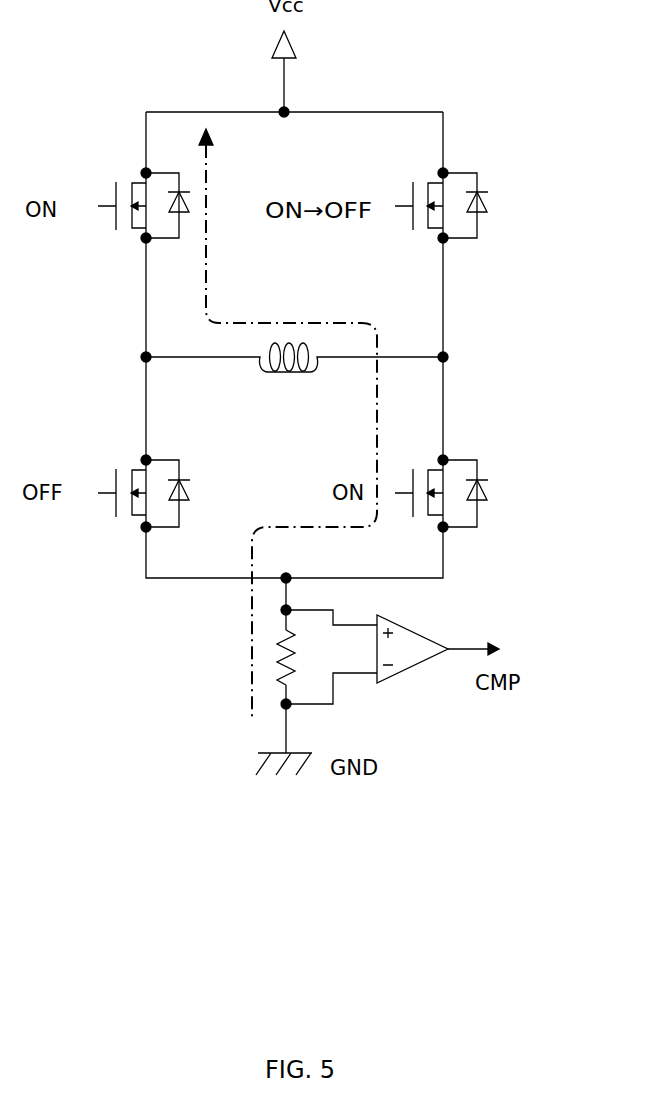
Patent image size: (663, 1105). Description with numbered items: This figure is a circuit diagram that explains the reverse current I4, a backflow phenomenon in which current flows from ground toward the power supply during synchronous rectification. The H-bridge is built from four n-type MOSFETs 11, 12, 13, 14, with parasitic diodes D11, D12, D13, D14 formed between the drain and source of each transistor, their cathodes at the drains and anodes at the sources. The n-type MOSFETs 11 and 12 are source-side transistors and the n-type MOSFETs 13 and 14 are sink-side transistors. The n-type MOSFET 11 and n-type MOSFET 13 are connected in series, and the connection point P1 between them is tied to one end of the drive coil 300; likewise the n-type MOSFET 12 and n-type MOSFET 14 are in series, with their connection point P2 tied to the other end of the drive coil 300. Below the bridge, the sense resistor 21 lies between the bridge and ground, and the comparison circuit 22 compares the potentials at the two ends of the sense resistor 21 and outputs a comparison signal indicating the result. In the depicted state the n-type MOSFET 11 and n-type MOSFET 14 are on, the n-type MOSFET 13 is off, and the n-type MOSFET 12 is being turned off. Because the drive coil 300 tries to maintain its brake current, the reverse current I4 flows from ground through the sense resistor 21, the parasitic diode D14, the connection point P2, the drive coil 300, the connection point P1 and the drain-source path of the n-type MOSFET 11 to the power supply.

The n-type MOSFET 11 is at (116, 190).
The n-type MOSFET 12 is at (413, 190).
The n-type MOSFET 13 is at (116, 484).
The n-type MOSFET 14 is at (413, 468).
The parasitic diode D11 is at (190, 190).
The parasitic diode D12 is at (488, 190).
The parasitic diode D13 is at (190, 478).
The parasitic diode D14 is at (488, 478).
The drive coil 300 is at (292, 375).
The sense resistor 21 is at (298, 652).
The comparison circuit 22 is at (422, 632).
The connection point P1 is at (146, 357).
The connection point P2 is at (443, 357).
The reverse current I4 is at (288, 423).